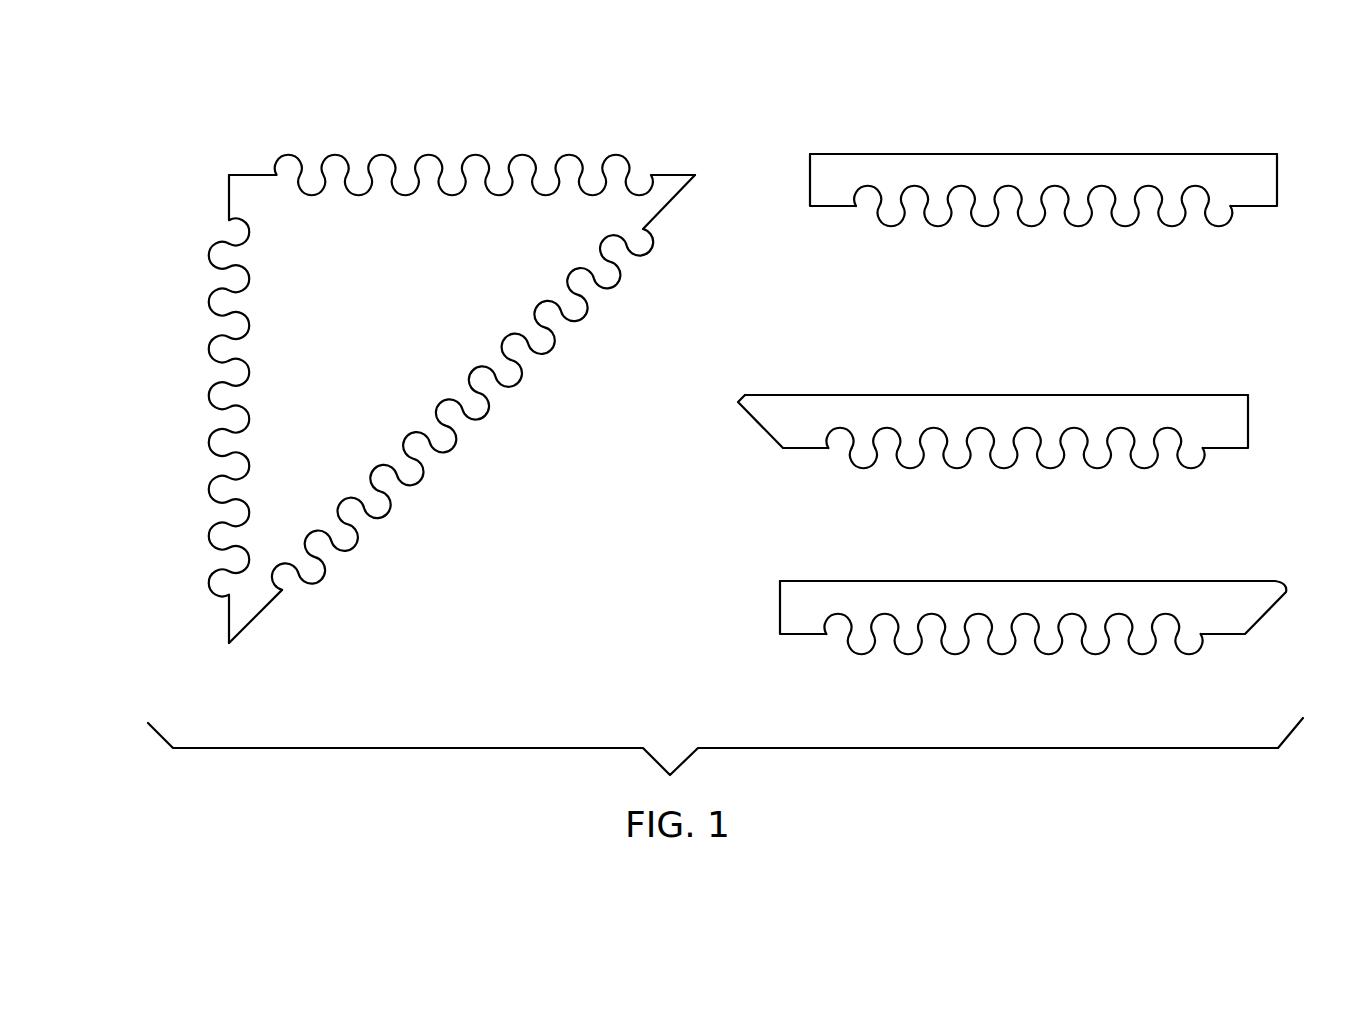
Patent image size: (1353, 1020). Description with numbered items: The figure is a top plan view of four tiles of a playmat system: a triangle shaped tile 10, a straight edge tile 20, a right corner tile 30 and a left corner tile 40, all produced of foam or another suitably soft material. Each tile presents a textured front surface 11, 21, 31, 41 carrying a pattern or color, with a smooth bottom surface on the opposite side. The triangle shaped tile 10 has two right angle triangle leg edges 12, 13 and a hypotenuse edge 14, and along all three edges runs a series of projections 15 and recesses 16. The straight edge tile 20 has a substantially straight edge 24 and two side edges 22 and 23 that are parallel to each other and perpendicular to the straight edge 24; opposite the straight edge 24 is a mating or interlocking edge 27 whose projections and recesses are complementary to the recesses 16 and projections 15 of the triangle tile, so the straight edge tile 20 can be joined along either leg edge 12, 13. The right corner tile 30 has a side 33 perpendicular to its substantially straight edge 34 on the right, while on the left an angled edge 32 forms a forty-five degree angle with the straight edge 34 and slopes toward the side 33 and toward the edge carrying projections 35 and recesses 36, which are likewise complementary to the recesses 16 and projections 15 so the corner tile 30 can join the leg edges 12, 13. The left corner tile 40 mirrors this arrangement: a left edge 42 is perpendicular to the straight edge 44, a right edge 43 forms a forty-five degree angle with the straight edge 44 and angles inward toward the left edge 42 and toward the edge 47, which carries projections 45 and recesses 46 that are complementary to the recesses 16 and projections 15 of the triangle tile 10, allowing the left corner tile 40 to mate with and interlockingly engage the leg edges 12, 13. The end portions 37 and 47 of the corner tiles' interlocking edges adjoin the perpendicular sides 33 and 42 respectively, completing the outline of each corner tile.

The triangle shaped tile 10 is at (402, 349).
The textured front surface 11 is at (402, 347).
The right angle triangle leg edge 12 is at (258, 237).
The right angle triangle leg edge 13 is at (373, 207).
The hypotenuse edge 14 is at (425, 401).
The projection 15 is at (235, 290).
The recess 16 is at (248, 327).
The straight edge tile 20 is at (1030, 168).
The textured front surface 21 is at (1049, 159).
The side edge 22 is at (808, 158).
The side edge 23 is at (1277, 173).
The substantially straight edge 24 is at (921, 154).
The interlocking edge 27 is at (1238, 207).
The right corner tile 30 is at (986, 415).
The textured front surface 31 is at (986, 406).
The angled edge 32 is at (756, 424).
The side 33 is at (1250, 412).
The substantially straight edge 34 is at (1000, 395).
The projection 35 is at (862, 466).
The recess 36 is at (841, 434).
The end protrusion 37 is at (1208, 445).
The left corner tile 40 is at (1003, 610).
The textured front surface 41 is at (1003, 610).
The left edge 42 is at (780, 600).
The chamfered end 43 is at (1267, 613).
The straight edge 44 is at (877, 581).
The projection 45 is at (860, 653).
The recess 46 is at (832, 618).
The edge 47 is at (1213, 636).